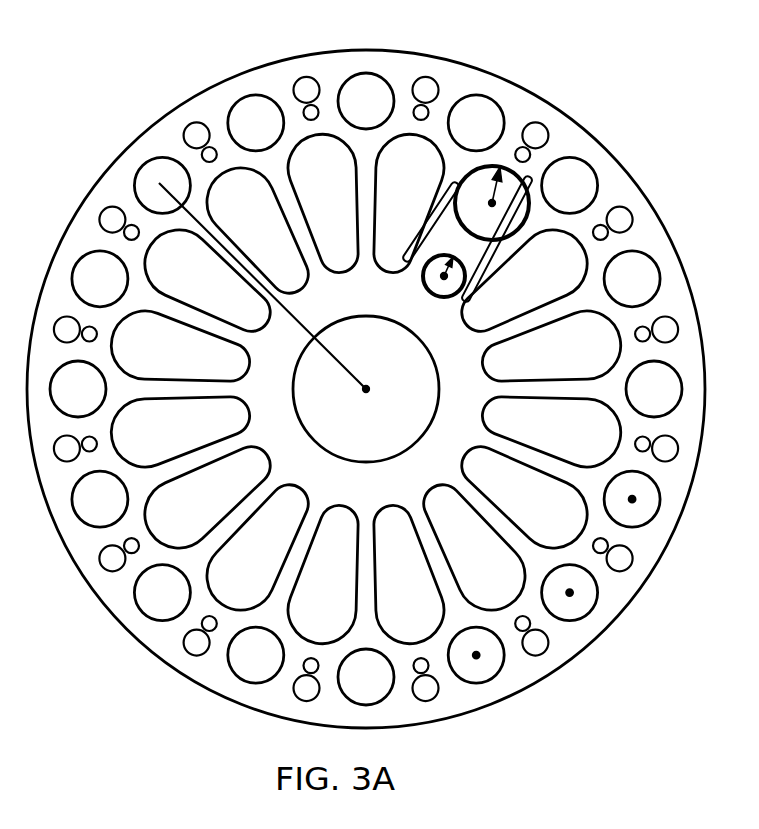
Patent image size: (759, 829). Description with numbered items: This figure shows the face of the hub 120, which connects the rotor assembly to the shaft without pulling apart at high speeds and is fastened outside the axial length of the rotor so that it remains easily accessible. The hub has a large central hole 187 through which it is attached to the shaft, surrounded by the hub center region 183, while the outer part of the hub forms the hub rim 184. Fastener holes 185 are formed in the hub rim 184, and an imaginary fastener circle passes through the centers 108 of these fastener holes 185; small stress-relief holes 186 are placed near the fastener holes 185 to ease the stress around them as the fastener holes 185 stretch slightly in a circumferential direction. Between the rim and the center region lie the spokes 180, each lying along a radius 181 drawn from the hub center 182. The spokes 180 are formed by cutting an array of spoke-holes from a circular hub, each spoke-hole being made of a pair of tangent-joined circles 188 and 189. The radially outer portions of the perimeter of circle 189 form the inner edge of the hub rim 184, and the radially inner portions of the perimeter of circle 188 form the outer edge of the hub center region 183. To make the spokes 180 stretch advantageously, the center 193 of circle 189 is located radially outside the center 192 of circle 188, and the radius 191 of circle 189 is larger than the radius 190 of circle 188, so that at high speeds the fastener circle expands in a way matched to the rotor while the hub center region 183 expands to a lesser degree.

The hub 120 is at (210, 85).
The centers of fastener holes 108 is at (632, 501).
The spokes 180 is at (213, 370).
The radius 181 is at (133, 187).
The hub center 182 is at (364, 391).
The hub center region 183 is at (381, 315).
The hub rim 184 is at (345, 723).
The fastener holes 185 is at (598, 188).
The stress-relief holes 186 is at (539, 121).
The central hole 187 is at (313, 447).
The circle 188 is at (466, 277).
The circle 189 is at (516, 218).
The radius of circle 188 190 is at (420, 270).
The radius of circle 189 191 is at (455, 203).
The center of circle 188 192 is at (470, 293).
The center of circle 189 193 is at (492, 203).